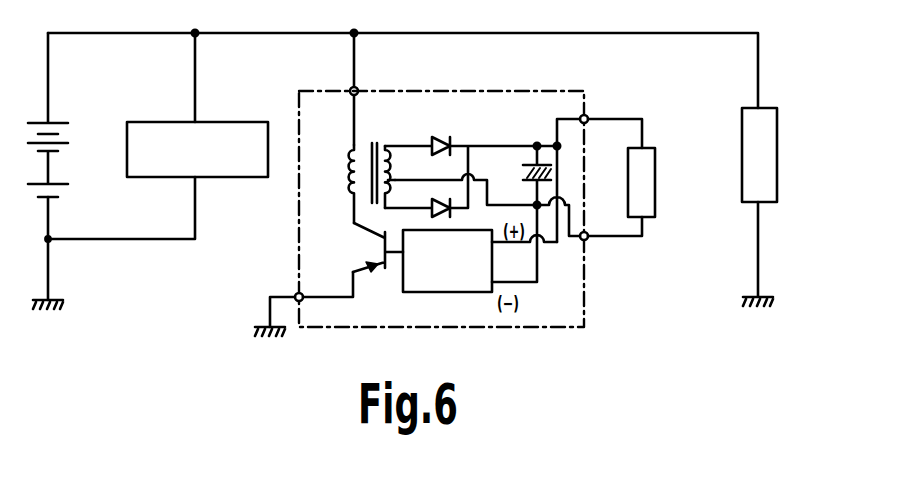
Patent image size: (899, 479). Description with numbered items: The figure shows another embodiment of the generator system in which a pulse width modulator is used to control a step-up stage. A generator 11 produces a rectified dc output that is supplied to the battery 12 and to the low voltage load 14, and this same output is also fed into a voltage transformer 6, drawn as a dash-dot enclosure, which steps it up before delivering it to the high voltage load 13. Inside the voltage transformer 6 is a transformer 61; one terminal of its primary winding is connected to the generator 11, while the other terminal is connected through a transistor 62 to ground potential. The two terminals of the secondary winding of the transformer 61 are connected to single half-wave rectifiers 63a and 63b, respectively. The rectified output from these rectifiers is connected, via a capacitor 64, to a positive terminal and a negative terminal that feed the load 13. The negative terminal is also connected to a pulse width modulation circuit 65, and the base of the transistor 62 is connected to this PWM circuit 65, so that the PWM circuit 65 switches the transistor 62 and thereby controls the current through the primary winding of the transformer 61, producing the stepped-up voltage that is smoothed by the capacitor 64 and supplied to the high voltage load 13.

The voltage transformer 6 is at (584, 283).
The generator 11 is at (222, 121).
The battery 12 is at (53, 122).
The high voltage load 13 is at (655, 175).
The low voltage load 14 is at (770, 157).
The transformer 61 is at (377, 142).
The transistor 62 is at (383, 250).
The single half-wave rectifier 63a is at (442, 137).
The single half-wave rectifier 63b is at (447, 187).
The capacitor 64 is at (531, 164).
The pulse width modulation (PWM) circuit 65 is at (452, 286).